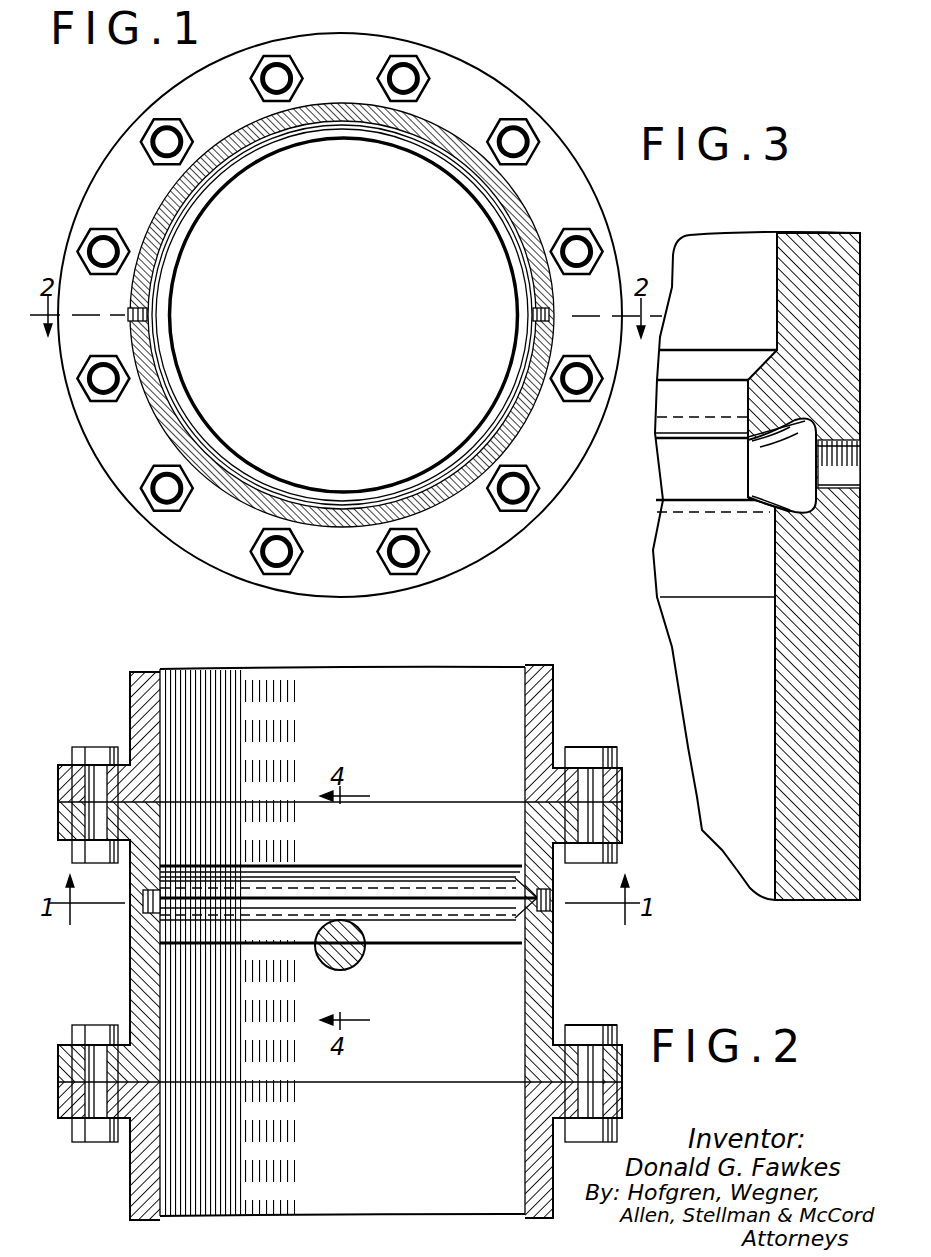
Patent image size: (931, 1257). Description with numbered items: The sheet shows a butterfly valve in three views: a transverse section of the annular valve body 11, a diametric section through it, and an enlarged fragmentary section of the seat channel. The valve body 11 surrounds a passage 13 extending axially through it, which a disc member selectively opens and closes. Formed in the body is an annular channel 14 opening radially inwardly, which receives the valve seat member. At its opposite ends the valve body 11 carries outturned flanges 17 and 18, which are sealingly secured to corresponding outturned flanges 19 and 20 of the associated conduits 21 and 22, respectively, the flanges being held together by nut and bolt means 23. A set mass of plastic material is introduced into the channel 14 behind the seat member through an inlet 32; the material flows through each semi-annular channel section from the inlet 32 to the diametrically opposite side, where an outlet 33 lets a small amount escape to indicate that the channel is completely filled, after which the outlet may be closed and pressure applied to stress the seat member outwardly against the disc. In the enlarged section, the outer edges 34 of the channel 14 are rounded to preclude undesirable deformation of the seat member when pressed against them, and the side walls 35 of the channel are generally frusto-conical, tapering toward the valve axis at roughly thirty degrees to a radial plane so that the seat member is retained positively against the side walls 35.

In FIG. 1, the annular valve body 11 is at (522, 92).
In FIG. 3, the annular valve body 11 is at (822, 880).
In FIG. 2, the annular valve body 11 is at (558, 972).
In FIG. 1, the passage 13 is at (360, 303).
In FIG. 3, the passage 13 is at (739, 682).
In FIG. 2, the passage 13 is at (438, 847).
In FIG. 1, the annular channel 14 is at (528, 262).
In FIG. 3, the annular channel 14 is at (792, 443).
In FIG. 2, the annular channel 14 is at (530, 900).
In FIG. 1, the outturned flange 17 is at (580, 206).
In FIG. 2, the outturned flange 17 is at (622, 828).
In FIG. 2, the outturned flange 18 is at (622, 1073).
In FIG. 2, the outturned flange 19 is at (622, 788).
In FIG. 2, the outturned flange 20 is at (620, 1100).
In FIG. 2, the conduit 21 is at (545, 690).
In FIG. 2, the conduit 22 is at (130, 1178).
In FIG. 1, the nut and bolt means 23 is at (530, 135).
In FIG. 2, the nut and bolt means 23 is at (606, 748).
In FIG. 1, the inlet 32 is at (548, 314).
In FIG. 3, the inlet 32 is at (830, 450).
In FIG. 2, the inlet 32 is at (548, 900).
In FIG. 1, the outlet 33 is at (140, 320).
In FIG. 2, the outlet 33 is at (140, 905).
In FIG. 3, the outer edges 34 is at (750, 444).
In FIG. 2, the outer edges 34 is at (518, 930).
In FIG. 3, the side walls 35 is at (776, 446).
In FIG. 2, the side walls 35 is at (514, 882).